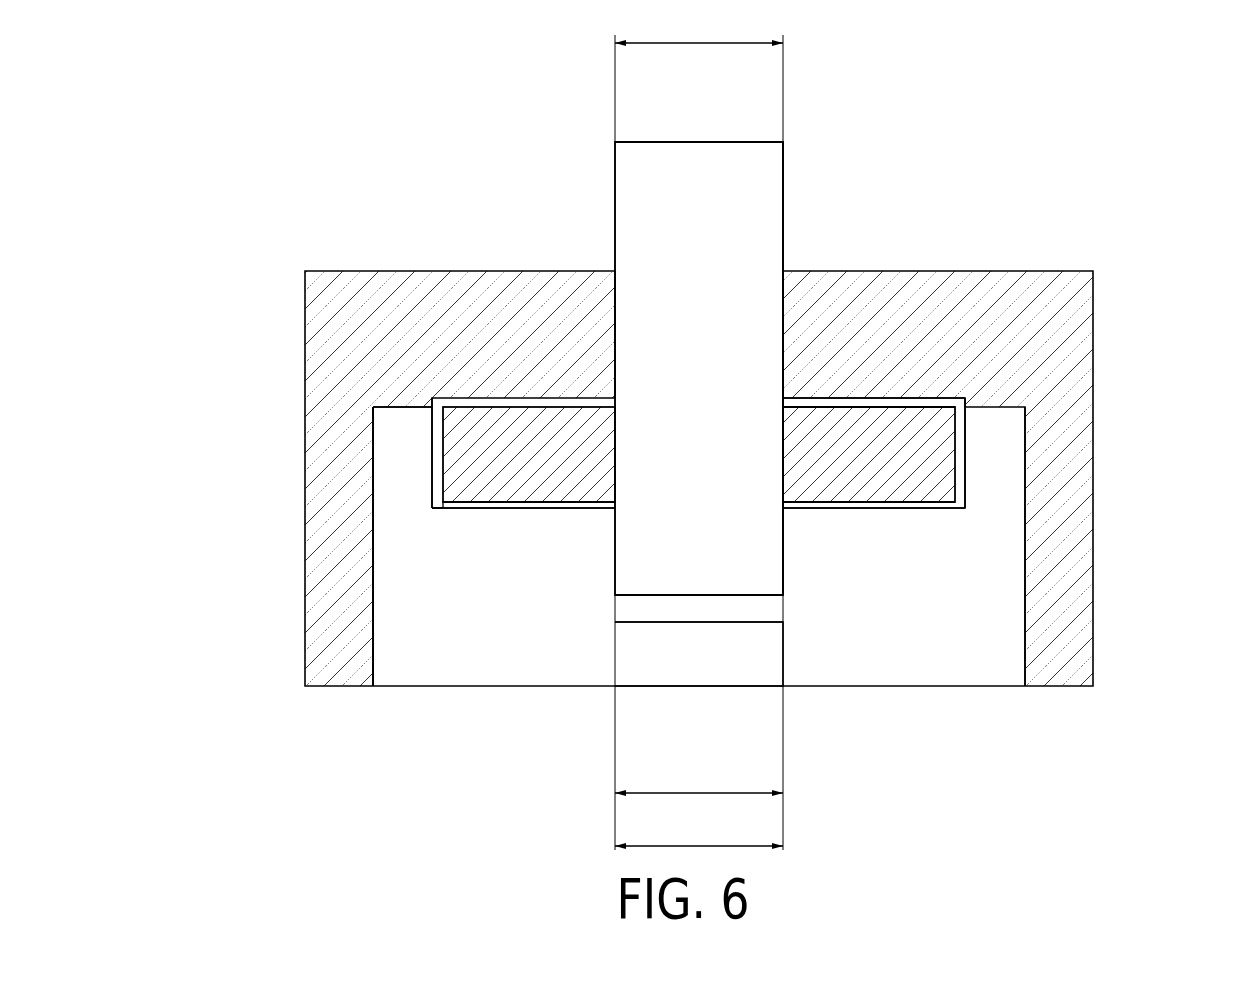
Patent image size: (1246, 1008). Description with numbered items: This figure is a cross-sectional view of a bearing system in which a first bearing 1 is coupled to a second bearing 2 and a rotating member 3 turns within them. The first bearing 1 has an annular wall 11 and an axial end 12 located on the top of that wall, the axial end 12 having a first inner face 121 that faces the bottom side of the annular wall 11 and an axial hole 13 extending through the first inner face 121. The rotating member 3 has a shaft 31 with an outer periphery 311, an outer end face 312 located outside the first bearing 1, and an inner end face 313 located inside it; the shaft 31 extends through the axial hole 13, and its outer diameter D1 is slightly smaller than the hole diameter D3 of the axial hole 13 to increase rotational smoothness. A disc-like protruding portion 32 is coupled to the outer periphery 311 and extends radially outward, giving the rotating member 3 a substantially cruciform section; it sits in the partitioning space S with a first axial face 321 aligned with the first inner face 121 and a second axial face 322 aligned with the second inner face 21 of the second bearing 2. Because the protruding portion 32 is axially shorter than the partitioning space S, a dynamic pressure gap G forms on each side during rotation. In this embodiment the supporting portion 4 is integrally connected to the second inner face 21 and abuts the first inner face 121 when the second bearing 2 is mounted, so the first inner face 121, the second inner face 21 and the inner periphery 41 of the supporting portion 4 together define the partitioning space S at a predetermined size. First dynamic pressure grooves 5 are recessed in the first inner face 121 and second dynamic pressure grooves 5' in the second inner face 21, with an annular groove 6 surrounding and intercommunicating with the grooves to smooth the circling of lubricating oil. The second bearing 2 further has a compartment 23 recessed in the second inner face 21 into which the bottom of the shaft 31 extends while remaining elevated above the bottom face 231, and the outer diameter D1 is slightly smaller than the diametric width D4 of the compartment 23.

The first bearing 1 is at (286, 333).
The annular wall 11 is at (325, 665).
The axial end 12 is at (922, 282).
The axial hole 13 is at (607, 365).
The first inner face 121 is at (965, 408).
The second bearing 2 is at (920, 667).
The second inner face 21 is at (528, 500).
The compartment 23 is at (769, 620).
The bottom face 231 is at (632, 621).
The rotating member 3 is at (563, 161).
The shaft 31 is at (653, 155).
The outer periphery 311 is at (783, 206).
The outer end face 312 is at (767, 140).
The inner end face 313 is at (683, 603).
The protruding portion 32 is at (930, 460).
The first axial face 321 is at (878, 407).
The second axial face 322 is at (887, 508).
The supporting portion 4 is at (410, 453).
The inner periphery 41 is at (434, 428).
The first dynamic pressure grooves 5 is at (478, 350).
The second dynamic pressure grooves 5' is at (432, 497).
The annular groove 6 is at (438, 517).
The dynamic pressure gap G is at (922, 395).
The partitioning space S is at (969, 485).
The outer diameter D1 is at (699, 778).
The hole diameter D3 is at (699, 25).
The diametric width D4 is at (699, 829).